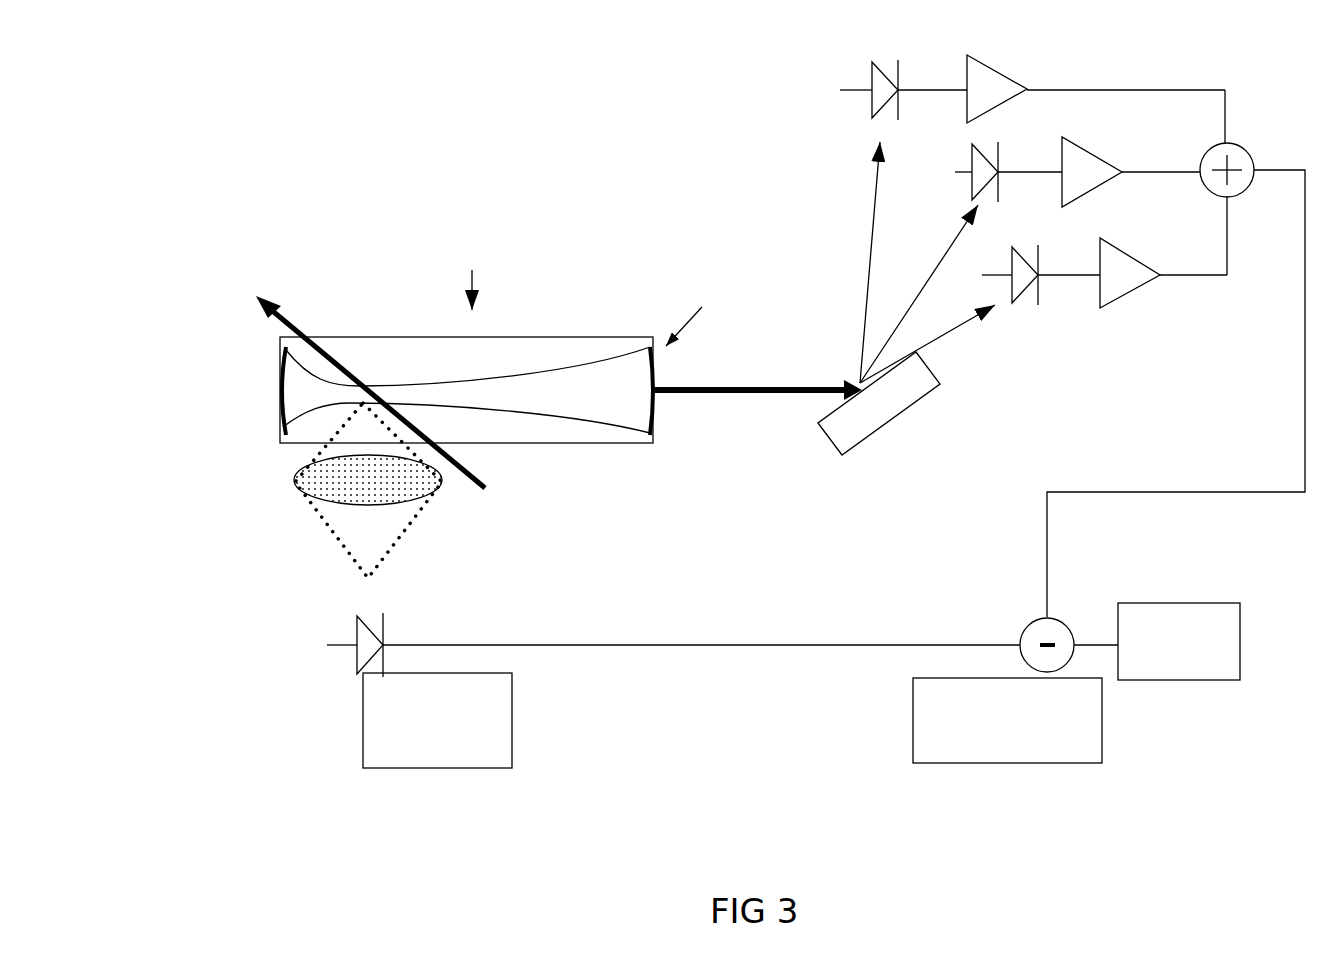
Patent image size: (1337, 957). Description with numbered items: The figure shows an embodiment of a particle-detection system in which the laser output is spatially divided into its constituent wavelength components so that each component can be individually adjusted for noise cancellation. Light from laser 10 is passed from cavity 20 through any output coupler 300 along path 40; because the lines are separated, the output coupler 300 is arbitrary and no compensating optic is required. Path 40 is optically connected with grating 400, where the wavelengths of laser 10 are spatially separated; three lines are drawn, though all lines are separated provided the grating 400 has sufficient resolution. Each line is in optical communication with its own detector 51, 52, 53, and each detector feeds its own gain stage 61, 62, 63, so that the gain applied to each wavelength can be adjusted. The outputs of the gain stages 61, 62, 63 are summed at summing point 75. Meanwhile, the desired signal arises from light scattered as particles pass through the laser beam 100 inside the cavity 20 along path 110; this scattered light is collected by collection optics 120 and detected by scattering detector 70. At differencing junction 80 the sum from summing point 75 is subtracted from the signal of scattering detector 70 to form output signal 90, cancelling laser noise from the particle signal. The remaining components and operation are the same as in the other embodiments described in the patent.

The laser 10 is at (485, 293).
The cavity 20 is at (572, 353).
The path 40 is at (815, 393).
The grating 400 is at (906, 298).
The detector 51 is at (871, 83).
The detector 52 is at (979, 170).
The detector 53 is at (1018, 269).
The gain stage 61 is at (1096, 95).
The gain stage 62 is at (1131, 172).
The gain stage 63 is at (1163, 252).
The summing point 75 is at (1245, 162).
The scattering detector 70 is at (512, 717).
The differencing junction 80 is at (995, 763).
The output signal 90 is at (1240, 638).
The laser beam 100 is at (572, 413).
The path 110 is at (472, 482).
The collection optics 120 is at (183, 510).
The output coupler 300 is at (657, 413).